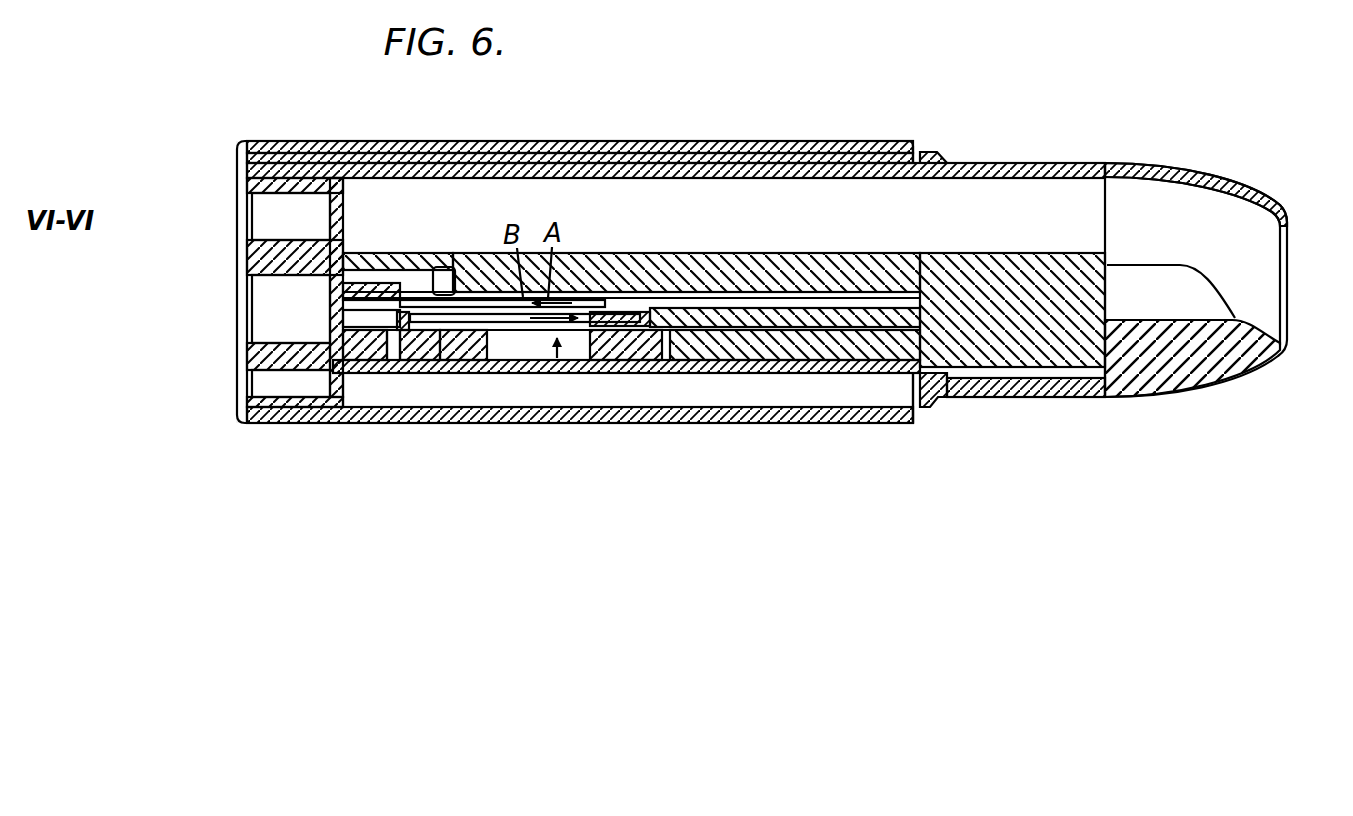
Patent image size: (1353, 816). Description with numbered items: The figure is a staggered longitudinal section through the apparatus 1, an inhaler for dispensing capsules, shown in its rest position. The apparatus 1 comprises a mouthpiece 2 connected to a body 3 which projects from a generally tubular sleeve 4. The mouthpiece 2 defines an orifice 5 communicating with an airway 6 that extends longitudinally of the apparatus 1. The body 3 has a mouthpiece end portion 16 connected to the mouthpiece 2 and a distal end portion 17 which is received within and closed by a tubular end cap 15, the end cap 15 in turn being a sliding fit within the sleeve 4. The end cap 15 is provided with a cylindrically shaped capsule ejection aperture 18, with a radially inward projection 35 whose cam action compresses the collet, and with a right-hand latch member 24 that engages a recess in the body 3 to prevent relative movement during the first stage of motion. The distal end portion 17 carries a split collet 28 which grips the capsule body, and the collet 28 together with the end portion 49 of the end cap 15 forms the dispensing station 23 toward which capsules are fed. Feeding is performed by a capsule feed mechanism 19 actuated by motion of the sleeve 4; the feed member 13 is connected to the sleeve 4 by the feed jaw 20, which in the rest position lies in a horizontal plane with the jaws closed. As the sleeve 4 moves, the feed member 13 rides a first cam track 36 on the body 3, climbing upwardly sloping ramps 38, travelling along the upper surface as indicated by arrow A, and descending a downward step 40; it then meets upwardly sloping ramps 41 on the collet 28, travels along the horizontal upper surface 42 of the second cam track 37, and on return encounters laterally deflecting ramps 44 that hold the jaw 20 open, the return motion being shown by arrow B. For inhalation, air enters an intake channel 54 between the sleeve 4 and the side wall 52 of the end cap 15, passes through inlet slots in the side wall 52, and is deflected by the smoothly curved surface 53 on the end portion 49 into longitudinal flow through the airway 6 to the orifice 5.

The apparatus 1 is at (174, 181).
The mouthpiece 2 is at (1135, 166).
The body 3 is at (985, 162).
The sleeve 4 is at (826, 150).
The orifice 5 is at (1288, 230).
The airway 6 is at (617, 203).
The right-hand feed member 13 is at (663, 292).
The end cap 15 is at (553, 160).
The mouthpiece end portion 16 is at (1062, 162).
The distal end portion 17 is at (285, 143).
The capsule ejection aperture 18 is at (234, 278).
The capsule feed mechanism 19 is at (556, 375).
The right feed jaw 20 is at (740, 365).
The dispensing station 23 is at (338, 138).
The right-hand latch member 24 is at (630, 362).
The collet 28 is at (436, 268).
The radially inward projection 35 is at (383, 365).
The first cam track 36 is at (528, 375).
The second cam track 37 is at (373, 322).
The upwardly sloping ramps 38 is at (623, 316).
The downward step 40 is at (428, 365).
The upwardly sloping ramps 41 is at (410, 395).
The horizontal upper surface 42 is at (345, 410).
The laterally deflecting ramps 44 is at (458, 310).
The end portion 49 is at (265, 420).
The side wall 52 is at (480, 365).
The smoothly curved surface 53 is at (366, 288).
The intake channel 54 is at (866, 385).